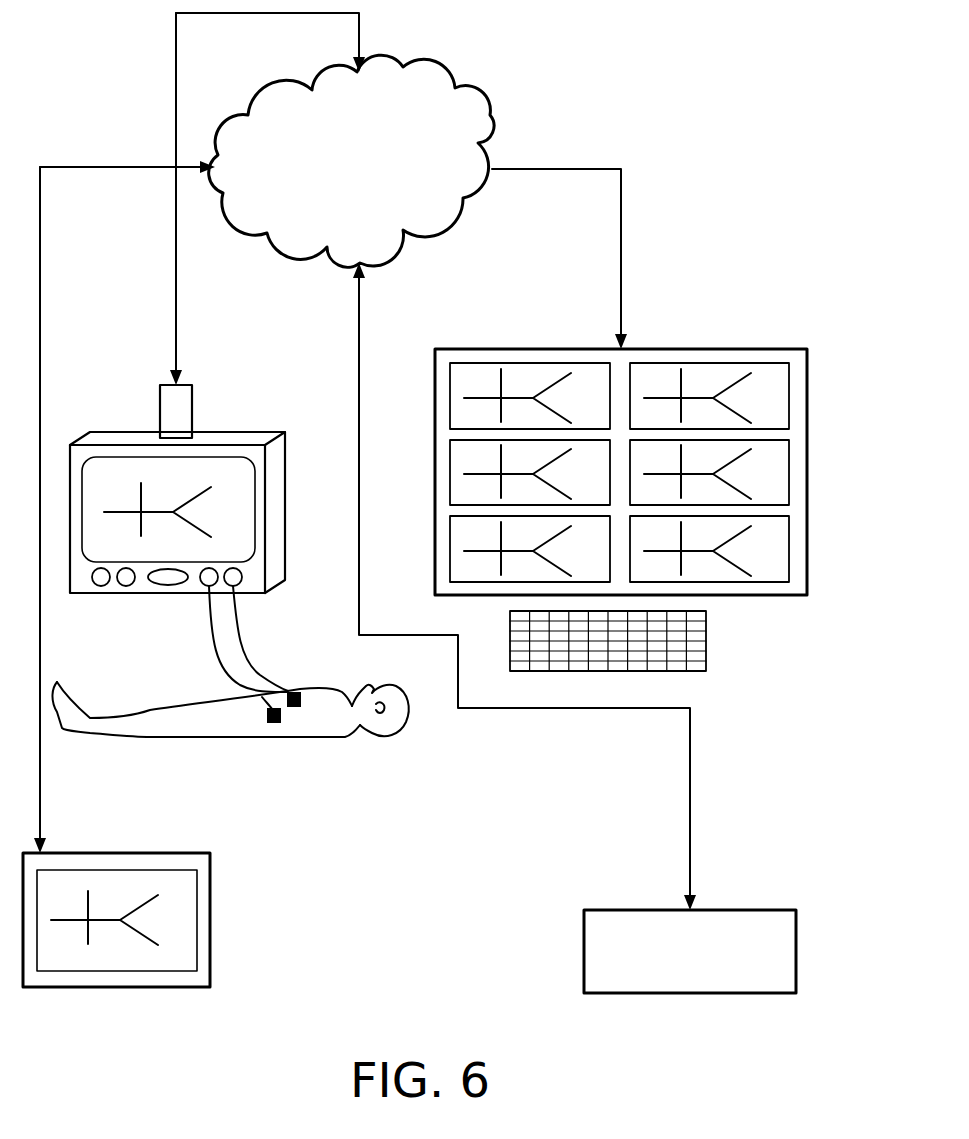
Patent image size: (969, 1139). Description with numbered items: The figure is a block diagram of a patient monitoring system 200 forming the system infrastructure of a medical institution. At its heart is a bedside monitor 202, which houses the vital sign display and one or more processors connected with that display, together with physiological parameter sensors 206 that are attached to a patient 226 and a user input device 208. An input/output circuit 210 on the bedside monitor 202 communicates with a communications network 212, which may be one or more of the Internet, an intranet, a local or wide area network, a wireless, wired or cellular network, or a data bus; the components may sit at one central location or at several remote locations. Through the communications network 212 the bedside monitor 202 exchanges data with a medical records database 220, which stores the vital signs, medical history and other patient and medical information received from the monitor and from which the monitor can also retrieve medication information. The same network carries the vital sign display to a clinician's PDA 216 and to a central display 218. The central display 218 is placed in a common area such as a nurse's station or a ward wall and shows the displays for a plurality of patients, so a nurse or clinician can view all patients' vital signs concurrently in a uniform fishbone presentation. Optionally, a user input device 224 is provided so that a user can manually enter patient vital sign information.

The patient monitoring system 200 is at (732, 53).
The bedside monitor 202 is at (203, 508).
The physiological parameter sensors 206 is at (266, 654).
The user input device 208 is at (158, 609).
The input/output circuit 210 is at (133, 407).
The communications network 212 is at (391, 161).
The clinician's PDA 216 is at (152, 883).
The central display 218 is at (594, 437).
The medical records database 220 is at (649, 951).
The user input device 224 is at (652, 641).
The patient 226 is at (269, 675).